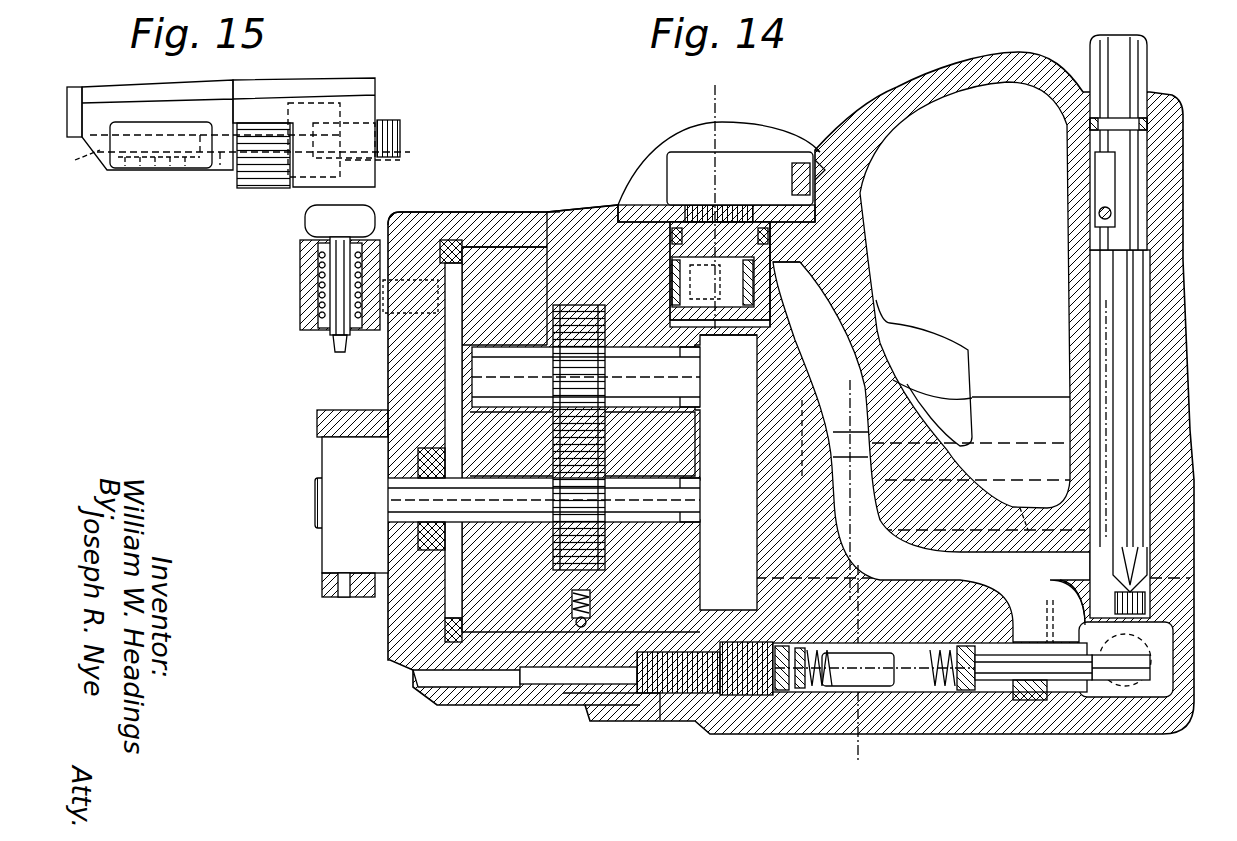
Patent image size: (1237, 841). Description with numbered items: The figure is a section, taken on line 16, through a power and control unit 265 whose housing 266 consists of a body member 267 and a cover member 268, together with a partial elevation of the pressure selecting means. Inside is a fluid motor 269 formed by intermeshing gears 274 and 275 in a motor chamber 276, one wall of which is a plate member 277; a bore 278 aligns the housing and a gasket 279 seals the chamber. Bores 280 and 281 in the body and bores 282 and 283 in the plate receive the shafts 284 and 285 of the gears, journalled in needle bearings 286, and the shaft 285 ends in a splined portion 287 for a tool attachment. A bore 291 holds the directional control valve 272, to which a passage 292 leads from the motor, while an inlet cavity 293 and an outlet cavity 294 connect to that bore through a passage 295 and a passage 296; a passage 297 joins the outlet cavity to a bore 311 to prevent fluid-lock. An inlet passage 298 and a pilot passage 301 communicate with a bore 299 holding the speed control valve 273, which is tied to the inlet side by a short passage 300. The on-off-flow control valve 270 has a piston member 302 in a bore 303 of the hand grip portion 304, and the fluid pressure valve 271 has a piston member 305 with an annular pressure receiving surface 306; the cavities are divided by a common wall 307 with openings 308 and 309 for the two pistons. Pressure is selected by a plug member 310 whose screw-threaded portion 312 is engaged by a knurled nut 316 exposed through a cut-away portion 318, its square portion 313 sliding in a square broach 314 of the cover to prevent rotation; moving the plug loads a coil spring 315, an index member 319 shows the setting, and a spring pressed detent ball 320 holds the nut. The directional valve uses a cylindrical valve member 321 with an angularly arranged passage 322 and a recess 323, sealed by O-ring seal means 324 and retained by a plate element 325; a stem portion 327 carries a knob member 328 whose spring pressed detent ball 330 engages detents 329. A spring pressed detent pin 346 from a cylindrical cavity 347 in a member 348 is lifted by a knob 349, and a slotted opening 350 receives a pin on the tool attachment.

In FIG. 14, the section line 16 is at (735, 97).
In FIG. 14, the power and control unit 265 is at (578, 183).
In FIG. 14, the housing 266 is at (613, 195).
In FIG. 15, the body member 267 is at (347, 86).
In FIG. 14, the body member 267 is at (873, 265).
In FIG. 15, the cover member 268 is at (112, 92).
In FIG. 14, the cover member 268 is at (500, 210).
In FIG. 14, the fluid motor 269 is at (556, 297).
In FIG. 14, the on-off-flow control valve 270 is at (1154, 77).
In FIG. 14, the fluid pressure valve 271 is at (955, 728).
In FIG. 14, the directional control valve 272 is at (777, 128).
In FIG. 14, the speed control valve 273 is at (913, 322).
In FIG. 14, the gear 274 is at (560, 366).
In FIG. 14, the gear 275 is at (560, 492).
In FIG. 14, the motor chamber 276 is at (553, 318).
In FIG. 14, the plate member 277 is at (475, 215).
In FIG. 14, the bore 278 is at (513, 240).
In FIG. 14, the gasket 279 is at (462, 600).
In FIG. 14, the bore 280 is at (700, 360).
In FIG. 14, the bore 281 is at (700, 488).
In FIG. 14, the bore 282 is at (475, 347).
In FIG. 14, the bore 283 is at (470, 478).
In FIG. 14, the shaft 284 is at (700, 386).
In FIG. 14, the shaft 285 is at (700, 518).
In FIG. 14, the needle bearings 286 is at (515, 410).
In FIG. 14, the splined portion 287 is at (315, 485).
In FIG. 14, the bore 291 is at (800, 237).
In FIG. 14, the passage 292 is at (680, 280).
In FIG. 14, the inlet cavity 293 is at (1150, 565).
In FIG. 14, the outlet cavity 294 is at (1180, 700).
In FIG. 14, the passage 295 is at (880, 355).
In FIG. 14, the passage 296 is at (745, 577).
In FIG. 14, the passage 297 is at (880, 690).
In FIG. 14, the inlet passage 298 is at (1028, 530).
In FIG. 14, the bore 299 is at (915, 420).
In FIG. 14, the short passage 300 is at (835, 425).
In FIG. 14, the pilot passage 301 is at (1028, 445).
In FIG. 14, the piston member 302 is at (1087, 232).
In FIG. 14, the bore 303 is at (1150, 326).
In FIG. 14, the hand grip portion 304 is at (1075, 180).
In FIG. 14, the piston member 305 is at (1125, 697).
In FIG. 14, the annular pressure receiving surface 306 is at (1060, 700).
In FIG. 14, the common wall 307 is at (1072, 598).
In FIG. 14, the opening 308 is at (1148, 603).
In FIG. 14, the opening 309 is at (1070, 642).
In FIG. 14, the plug member 310 is at (782, 700).
In FIG. 15, the bore 311 is at (400, 161).
In FIG. 14, the bore 311 is at (740, 695).
In FIG. 15, the externally screw-threaded portion 312 is at (388, 128).
In FIG. 14, the externally screw-threaded portion 312 is at (678, 725).
In FIG. 15, the square portion 313 is at (220, 170).
In FIG. 14, the square portion 313 is at (540, 690).
In FIG. 15, the square broach 314 is at (92, 160).
In FIG. 14, the square broach 314 is at (413, 680).
In FIG. 14, the coil spring 315 is at (830, 652).
In FIG. 15, the knurled nut 316 is at (258, 158).
In FIG. 14, the knurled nut 316 is at (568, 705).
In FIG. 15, the cut-away portion 318 is at (290, 178).
In FIG. 14, the cut-away portion 318 is at (630, 722).
In FIG. 15, the index member 319 is at (152, 170).
In FIG. 14, the spring pressed detent ball 320 is at (592, 620).
In FIG. 14, the cylindrical valve member 321 is at (695, 240).
In FIG. 14, the angularly arranged passage 322 is at (672, 270).
In FIG. 14, the recess 323 is at (765, 285).
In FIG. 14, the O-ring seal means 324 is at (775, 232).
In FIG. 14, the plate element 325 is at (820, 215).
In FIG. 14, the stem portion 327 is at (735, 205).
In FIG. 14, the knob member 328 is at (690, 140).
In FIG. 14, the detents 329 is at (815, 180).
In FIG. 14, the spring pressed detent ball 330 is at (820, 168).
In FIG. 14, the spring pressed detent pin 346 is at (333, 348).
In FIG. 14, the cylindrical cavity 347 is at (320, 310).
In FIG. 14, the member 348 is at (318, 290).
In FIG. 14, the knob 349 is at (310, 230).
In FIG. 14, the slotted opening 350 is at (360, 597).